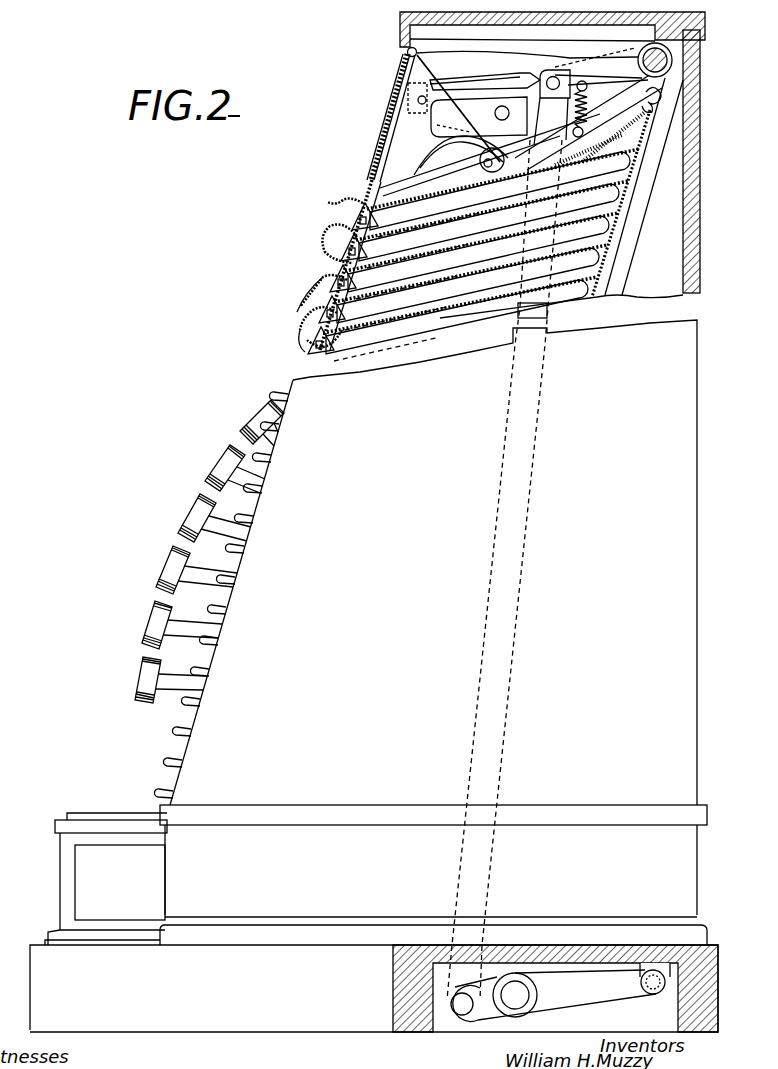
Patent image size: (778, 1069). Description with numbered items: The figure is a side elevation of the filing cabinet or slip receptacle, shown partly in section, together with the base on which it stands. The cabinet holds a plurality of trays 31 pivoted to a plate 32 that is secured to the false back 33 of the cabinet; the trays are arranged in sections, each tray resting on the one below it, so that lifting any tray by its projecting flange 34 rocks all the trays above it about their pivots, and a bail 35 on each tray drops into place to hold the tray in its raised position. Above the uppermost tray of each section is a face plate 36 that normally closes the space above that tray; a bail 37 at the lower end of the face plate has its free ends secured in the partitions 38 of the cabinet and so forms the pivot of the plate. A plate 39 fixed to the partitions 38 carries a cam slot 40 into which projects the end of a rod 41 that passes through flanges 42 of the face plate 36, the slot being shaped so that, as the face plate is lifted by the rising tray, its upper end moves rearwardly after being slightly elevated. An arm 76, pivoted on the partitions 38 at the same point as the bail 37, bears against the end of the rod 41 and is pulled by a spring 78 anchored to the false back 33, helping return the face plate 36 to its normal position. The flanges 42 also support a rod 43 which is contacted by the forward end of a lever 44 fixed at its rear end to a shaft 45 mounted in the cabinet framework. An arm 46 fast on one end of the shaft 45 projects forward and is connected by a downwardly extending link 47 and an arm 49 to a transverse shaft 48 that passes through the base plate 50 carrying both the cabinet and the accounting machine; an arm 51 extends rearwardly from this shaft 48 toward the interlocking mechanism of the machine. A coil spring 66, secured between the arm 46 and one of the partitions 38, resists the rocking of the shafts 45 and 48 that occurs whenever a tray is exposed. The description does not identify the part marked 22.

The frame 22 is at (492, 200).
The trays 31 is at (472, 151).
The plate 32 is at (623, 187).
The false back 33 is at (647, 181).
The projecting flange 34 is at (326, 213).
The bail 35 is at (472, 190).
The face plate 36 is at (370, 180).
The bail 37 is at (417, 175).
The partitions 38 is at (660, 96).
The plates 39 is at (440, 82).
The cam slots 40 is at (478, 84).
The rod 41 is at (408, 104).
The flanges 42 is at (398, 128).
The rod 43 is at (405, 57).
The lever 44 is at (407, 49).
The shaft 45 is at (666, 62).
The arm 46 is at (596, 85).
The link 47 is at (546, 326).
The transverse shaft 48 is at (536, 988).
The arm 49 is at (469, 1028).
The base plate 50 is at (312, 1030).
The arm 51 is at (616, 995).
The coil spring 66 is at (572, 118).
The arms 76 is at (479, 117).
The spring 78 is at (650, 115).